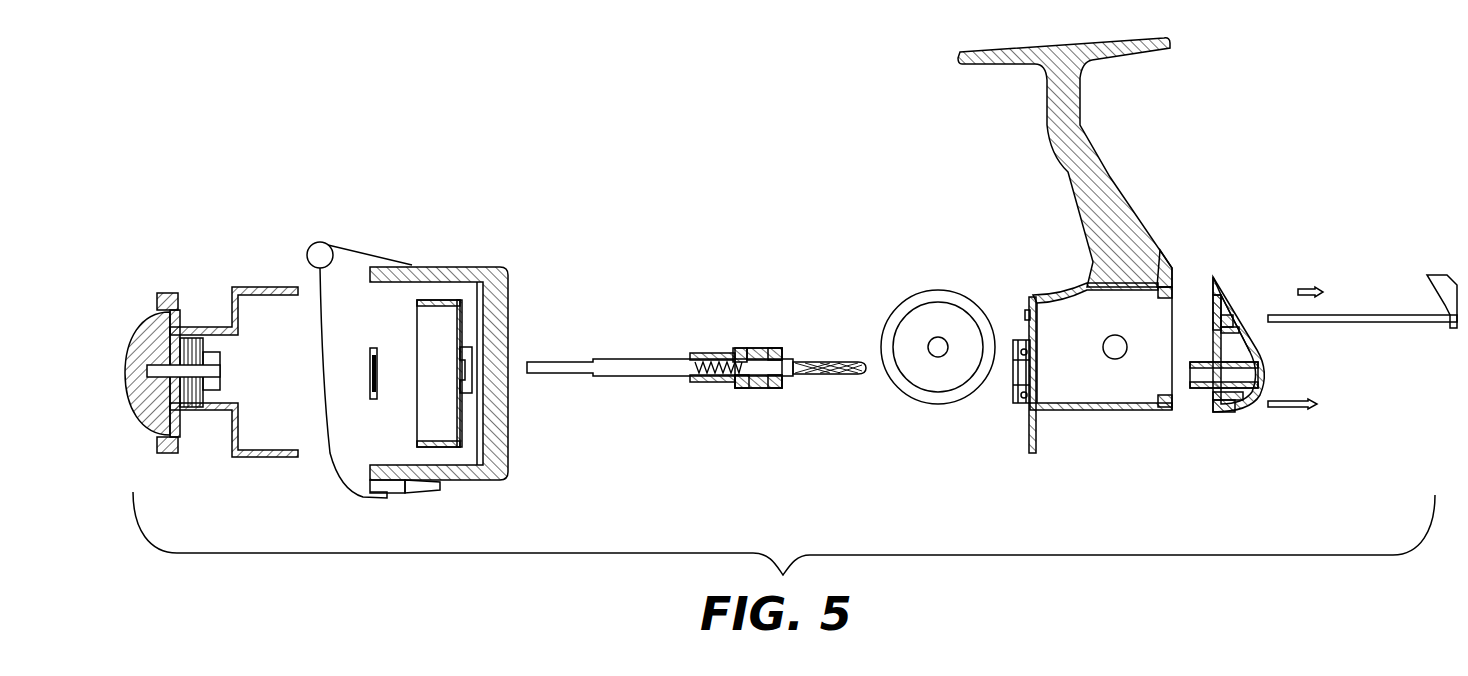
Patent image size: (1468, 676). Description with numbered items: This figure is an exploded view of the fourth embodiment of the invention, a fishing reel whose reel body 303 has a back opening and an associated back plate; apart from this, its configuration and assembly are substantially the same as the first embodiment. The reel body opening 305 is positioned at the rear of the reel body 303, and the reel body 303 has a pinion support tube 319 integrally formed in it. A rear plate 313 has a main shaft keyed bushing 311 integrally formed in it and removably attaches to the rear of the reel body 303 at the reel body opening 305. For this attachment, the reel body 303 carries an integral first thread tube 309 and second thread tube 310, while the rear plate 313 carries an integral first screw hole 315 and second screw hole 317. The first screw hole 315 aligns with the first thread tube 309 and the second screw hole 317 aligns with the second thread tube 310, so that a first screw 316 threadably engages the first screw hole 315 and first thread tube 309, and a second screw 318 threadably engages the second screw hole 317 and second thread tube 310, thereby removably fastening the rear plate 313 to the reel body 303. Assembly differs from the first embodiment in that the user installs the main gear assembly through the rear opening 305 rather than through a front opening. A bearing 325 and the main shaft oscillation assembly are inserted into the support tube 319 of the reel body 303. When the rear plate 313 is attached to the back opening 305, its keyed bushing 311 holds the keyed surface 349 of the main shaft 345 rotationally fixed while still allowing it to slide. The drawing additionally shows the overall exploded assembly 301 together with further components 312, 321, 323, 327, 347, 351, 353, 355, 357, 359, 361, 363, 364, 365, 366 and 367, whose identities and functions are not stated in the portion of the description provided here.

The reel drag assembly 301 is at (316, 90).
The reel body 303 is at (1124, 171).
The reel body opening 305 is at (1167, 313).
The first thread tube 309 is at (1175, 272).
The second thread tube 310 is at (1173, 402).
The main shaft keyed bushing 311 is at (1267, 367).
The cover flange 312 is at (1223, 292).
The rear plate 313 is at (1253, 431).
The first screw hole 315 is at (1216, 276).
The first screw 316 is at (1316, 285).
The second screw hole 317 is at (1220, 412).
The second screw 318 is at (1319, 403).
The pinion support tube 319 is at (1020, 403).
The upper mounting tab 321 is at (1037, 297).
The front bearing 323 is at (1013, 313).
The bearing 325 is at (1013, 395).
The drag disc 327 is at (938, 291).
The main shaft 345 is at (613, 372).
The nut 347 is at (705, 355).
The keyed surface 349 is at (837, 363).
The coupling sleeve 351 is at (750, 357).
The sleeve lower flange 353 is at (777, 387).
The spring 355 is at (727, 382).
The sleeve upper flange 357 is at (770, 357).
The stop block 359 is at (742, 362).
The sleeve inner flange 361 is at (750, 388).
The housing cover 363 is at (449, 247).
The inner member 364 is at (453, 357).
The contact element 365 is at (373, 400).
The knob 366 is at (244, 280).
The rod 367 is at (1400, 320).